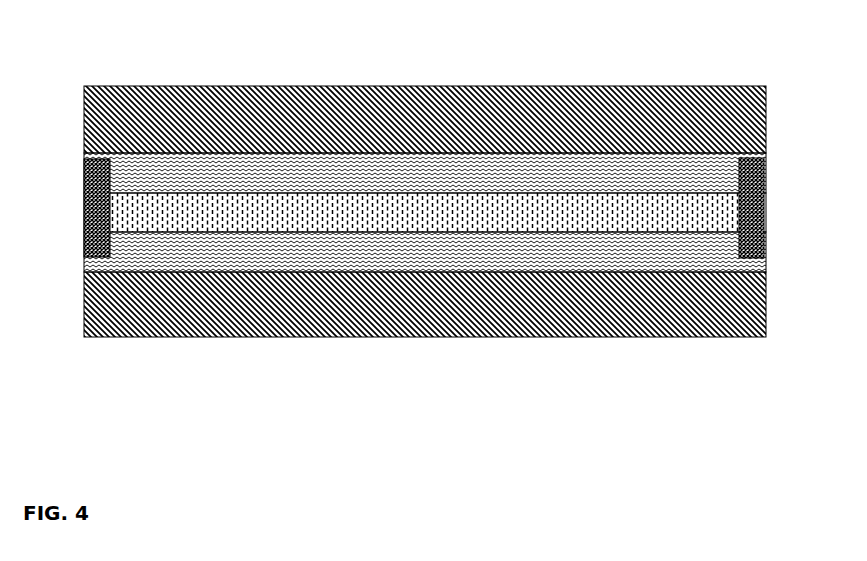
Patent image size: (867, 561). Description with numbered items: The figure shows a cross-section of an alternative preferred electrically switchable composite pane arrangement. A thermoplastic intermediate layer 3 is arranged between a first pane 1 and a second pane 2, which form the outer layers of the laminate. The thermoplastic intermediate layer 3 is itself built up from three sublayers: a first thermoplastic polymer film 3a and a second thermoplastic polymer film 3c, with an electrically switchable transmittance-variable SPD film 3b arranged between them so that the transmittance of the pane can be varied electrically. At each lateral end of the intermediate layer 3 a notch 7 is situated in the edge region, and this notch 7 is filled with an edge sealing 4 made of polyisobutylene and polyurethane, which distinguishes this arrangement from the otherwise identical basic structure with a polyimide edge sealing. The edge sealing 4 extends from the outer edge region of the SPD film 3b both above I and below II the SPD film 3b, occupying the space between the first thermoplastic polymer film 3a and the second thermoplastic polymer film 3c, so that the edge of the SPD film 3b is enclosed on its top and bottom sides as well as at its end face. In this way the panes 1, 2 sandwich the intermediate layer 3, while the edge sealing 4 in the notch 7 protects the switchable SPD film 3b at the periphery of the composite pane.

The first pane 1 is at (197, 72).
The second pane 2 is at (222, 345).
The thermoplastic intermediate layer 3 is at (431, 195).
The first thermoplastic polymer film 3a is at (84, 258).
The electrically switchable transmittance-variable SPD film 3b is at (168, 218).
The second thermoplastic polymer film 3c is at (84, 160).
The edge sealing 4 is at (83, 220).
The notch 7 is at (766, 183).
The above the SPD film I is at (502, 233).
The below the SPD film II is at (508, 192).